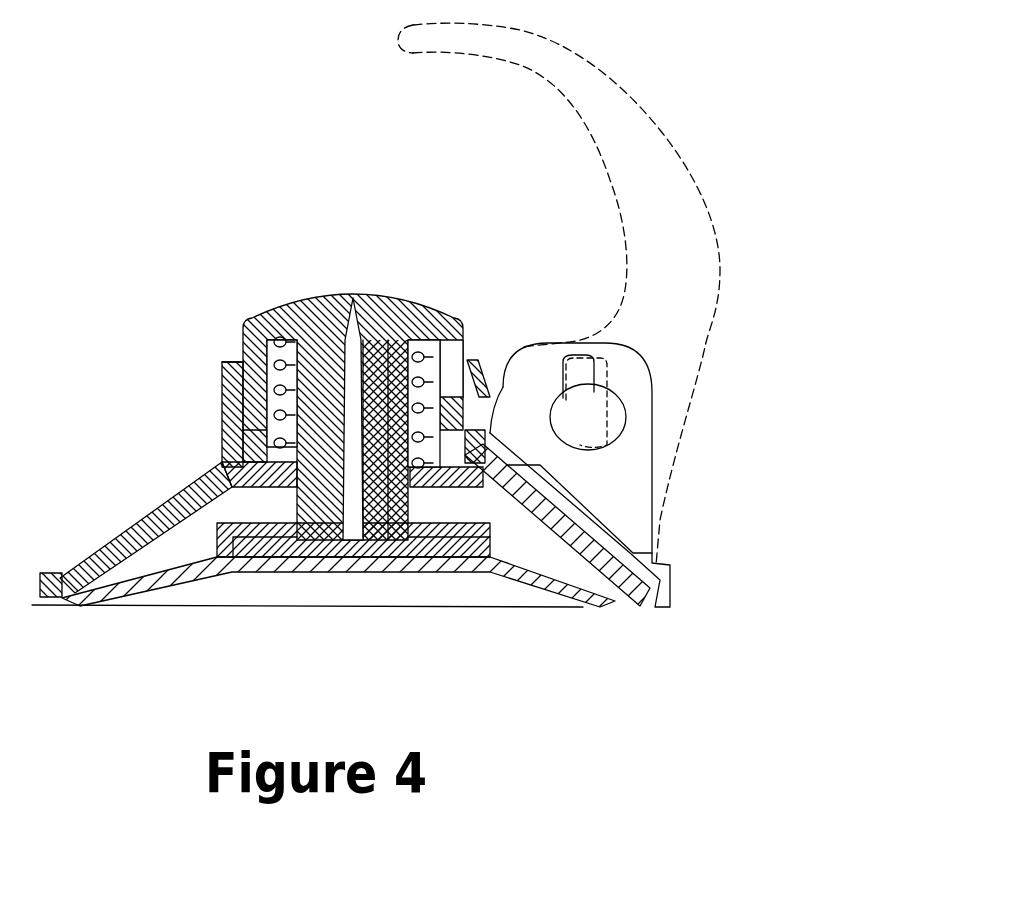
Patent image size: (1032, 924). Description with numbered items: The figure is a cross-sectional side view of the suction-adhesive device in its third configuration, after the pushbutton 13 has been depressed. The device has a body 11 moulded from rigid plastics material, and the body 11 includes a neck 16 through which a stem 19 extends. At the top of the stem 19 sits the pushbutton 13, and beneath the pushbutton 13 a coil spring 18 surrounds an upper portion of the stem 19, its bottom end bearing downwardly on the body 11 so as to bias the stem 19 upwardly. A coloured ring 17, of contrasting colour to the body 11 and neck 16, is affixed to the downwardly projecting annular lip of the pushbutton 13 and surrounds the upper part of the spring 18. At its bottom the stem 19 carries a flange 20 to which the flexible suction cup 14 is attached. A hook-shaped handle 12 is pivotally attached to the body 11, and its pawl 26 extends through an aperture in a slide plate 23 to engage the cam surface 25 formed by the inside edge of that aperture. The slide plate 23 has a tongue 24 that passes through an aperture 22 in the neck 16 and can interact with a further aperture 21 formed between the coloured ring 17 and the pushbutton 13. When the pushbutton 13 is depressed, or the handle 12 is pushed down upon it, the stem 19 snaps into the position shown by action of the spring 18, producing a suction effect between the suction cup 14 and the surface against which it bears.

The body 11 is at (105, 548).
The handle 12 is at (580, 63).
The pushbutton 13 is at (383, 297).
The suction cup 14 is at (583, 583).
The neck 16 is at (230, 400).
The coloured ring 17 is at (235, 362).
The coil spring 18 is at (277, 447).
The stem 19 is at (307, 297).
The flange 20 is at (397, 540).
The aperture 21 is at (452, 373).
The aperture 22 is at (477, 390).
The slide plate 23 is at (630, 492).
The tongue 24 is at (492, 400).
The cam surface 25 is at (625, 410).
The pawl 26 is at (577, 373).